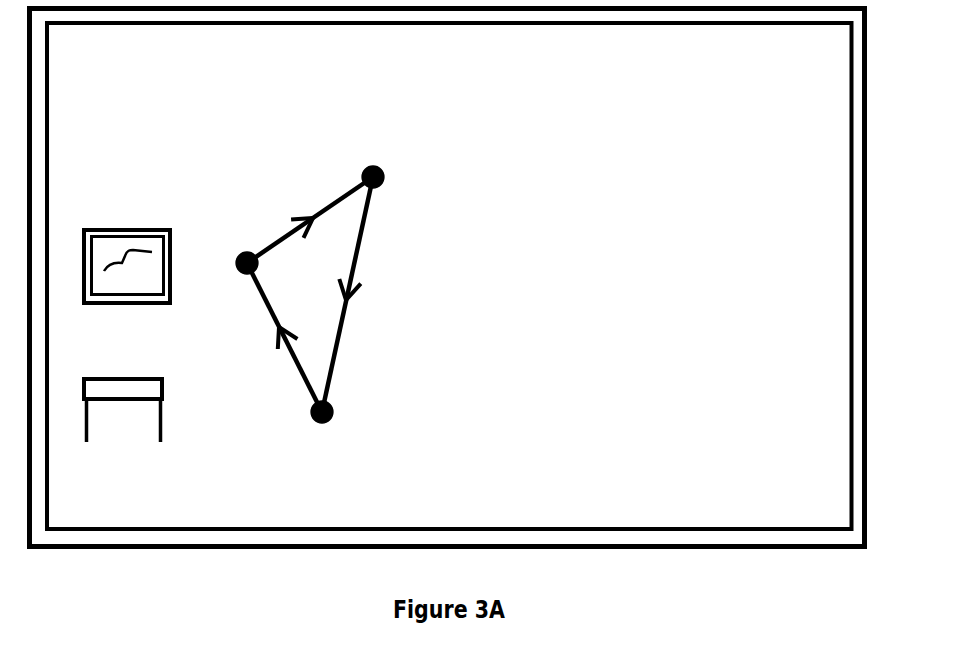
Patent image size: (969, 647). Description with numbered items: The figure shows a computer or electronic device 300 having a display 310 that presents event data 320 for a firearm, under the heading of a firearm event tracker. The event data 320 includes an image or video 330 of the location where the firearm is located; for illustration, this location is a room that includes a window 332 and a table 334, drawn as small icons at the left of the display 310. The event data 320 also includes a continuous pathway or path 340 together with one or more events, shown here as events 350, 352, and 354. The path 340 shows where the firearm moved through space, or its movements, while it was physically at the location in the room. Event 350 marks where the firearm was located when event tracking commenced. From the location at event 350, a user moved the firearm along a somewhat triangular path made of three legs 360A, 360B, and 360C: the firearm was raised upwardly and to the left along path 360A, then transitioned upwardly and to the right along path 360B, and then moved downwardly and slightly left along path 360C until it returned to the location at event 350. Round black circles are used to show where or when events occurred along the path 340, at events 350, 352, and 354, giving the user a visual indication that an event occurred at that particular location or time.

The electronic device 300 is at (865, 95).
The display 310 is at (800, 73).
The event data 320 is at (462, 177).
The image or video 330 is at (215, 440).
The window 332 is at (136, 228).
The table 334 is at (110, 376).
The path 340 is at (369, 352).
The event 350 is at (332, 421).
The event 352 is at (241, 255).
The event 354 is at (379, 167).
The path leg 360A is at (290, 357).
The path leg 360B is at (322, 208).
The path leg 360C is at (363, 257).